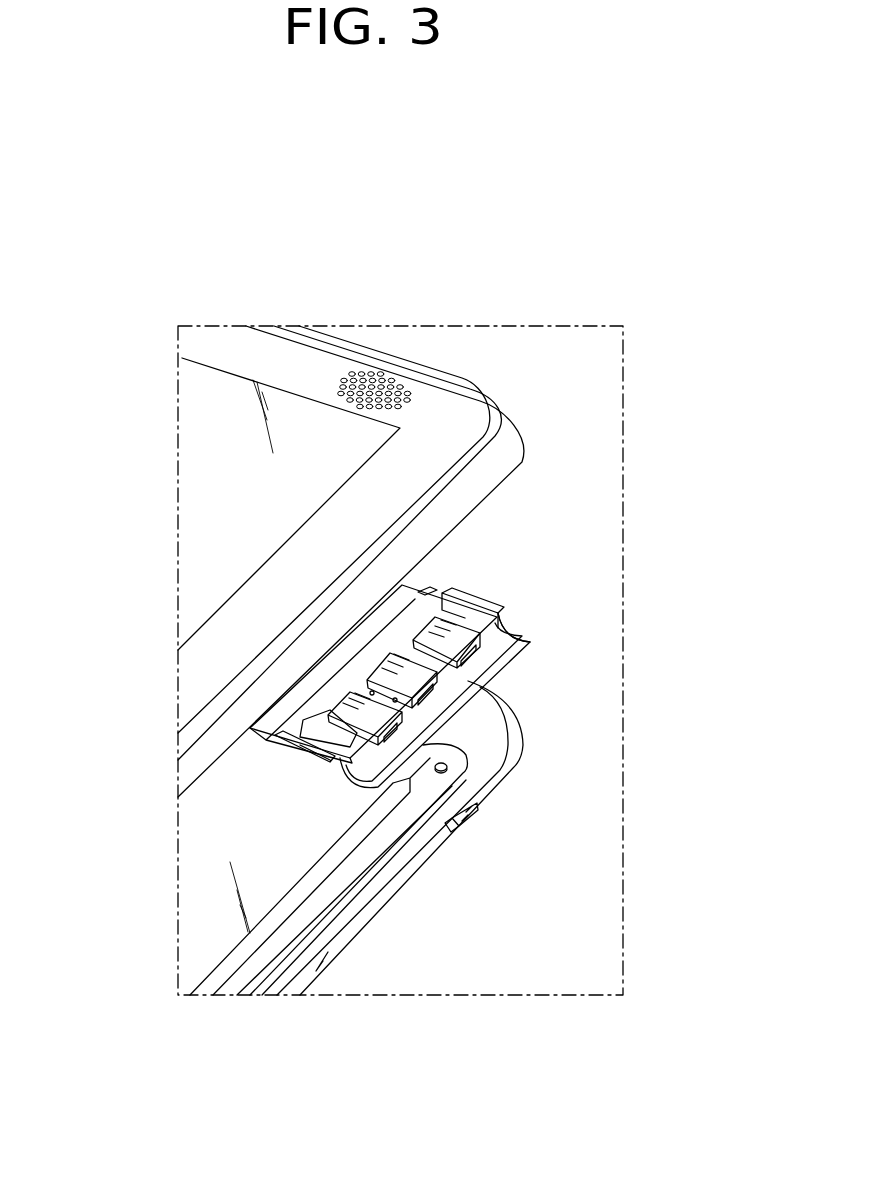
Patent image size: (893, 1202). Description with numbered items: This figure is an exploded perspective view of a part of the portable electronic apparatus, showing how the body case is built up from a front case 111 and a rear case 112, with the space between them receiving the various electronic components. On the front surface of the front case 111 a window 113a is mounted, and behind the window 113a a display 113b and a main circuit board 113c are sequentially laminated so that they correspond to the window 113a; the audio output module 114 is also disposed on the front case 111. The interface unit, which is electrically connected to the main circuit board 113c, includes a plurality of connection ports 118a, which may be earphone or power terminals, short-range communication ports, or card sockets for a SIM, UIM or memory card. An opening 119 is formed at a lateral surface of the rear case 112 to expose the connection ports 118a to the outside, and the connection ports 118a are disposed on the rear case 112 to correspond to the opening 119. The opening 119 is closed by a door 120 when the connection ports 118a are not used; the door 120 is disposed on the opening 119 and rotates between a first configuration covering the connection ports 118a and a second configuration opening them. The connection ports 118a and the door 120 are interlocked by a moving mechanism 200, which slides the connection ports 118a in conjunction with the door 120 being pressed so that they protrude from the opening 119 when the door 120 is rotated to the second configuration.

The front case 111 is at (513, 430).
The rear case 112 is at (508, 758).
The window 113a is at (202, 490).
The display 113b is at (210, 848).
The main circuit board 113c is at (350, 868).
The audio output module 114 is at (387, 382).
The connection ports 118a is at (463, 612).
The opening 119 is at (448, 830).
The door 120 is at (505, 642).
The moving mechanism 200 is at (475, 654).